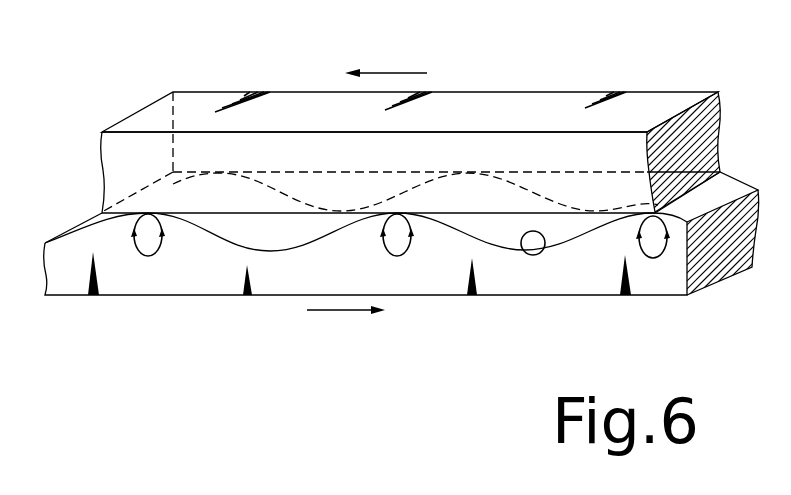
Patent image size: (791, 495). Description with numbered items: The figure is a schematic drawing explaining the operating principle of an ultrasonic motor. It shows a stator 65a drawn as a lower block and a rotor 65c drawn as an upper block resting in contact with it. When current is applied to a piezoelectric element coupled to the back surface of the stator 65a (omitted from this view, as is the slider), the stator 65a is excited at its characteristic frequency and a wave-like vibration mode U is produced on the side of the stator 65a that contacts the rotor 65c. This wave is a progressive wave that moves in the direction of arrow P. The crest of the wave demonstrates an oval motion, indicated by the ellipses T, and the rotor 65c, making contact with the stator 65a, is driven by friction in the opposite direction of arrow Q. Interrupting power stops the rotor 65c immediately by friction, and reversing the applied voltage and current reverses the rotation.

The rotor 65c is at (541, 100).
The stator 65a is at (275, 278).
The oval motion of wave crest T is at (152, 256).
The wave-like vibration mode U is at (537, 255).
The direction of progressive wave P is at (346, 329).
The direction of rotor operation Q is at (386, 52).